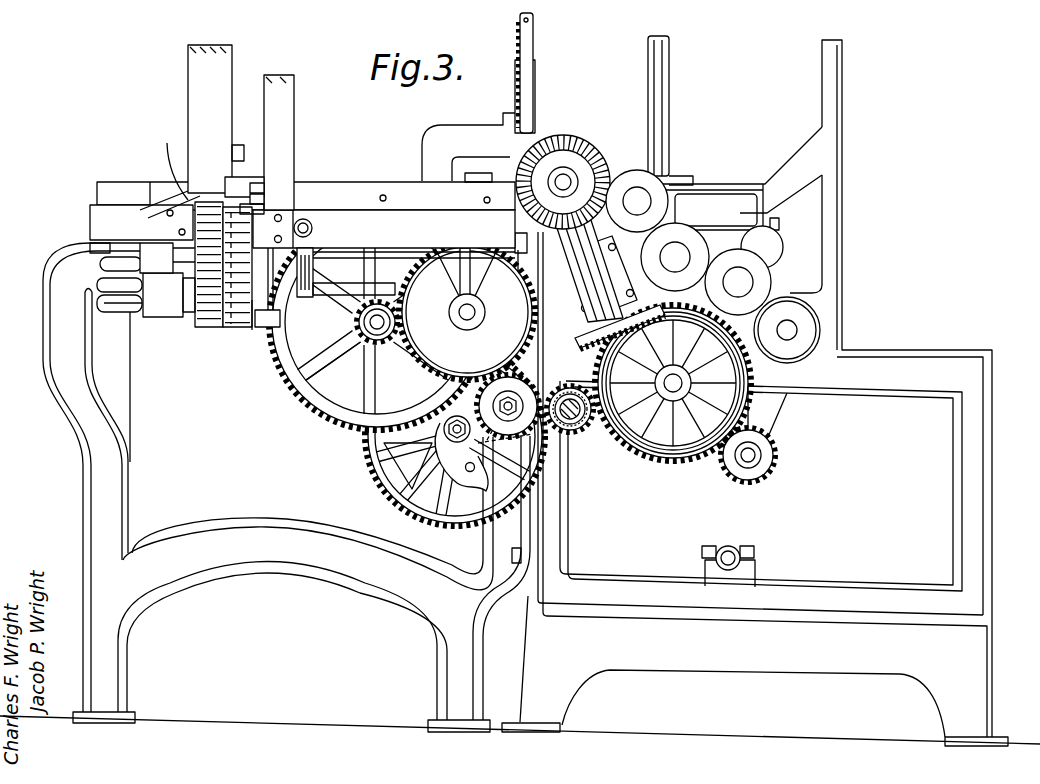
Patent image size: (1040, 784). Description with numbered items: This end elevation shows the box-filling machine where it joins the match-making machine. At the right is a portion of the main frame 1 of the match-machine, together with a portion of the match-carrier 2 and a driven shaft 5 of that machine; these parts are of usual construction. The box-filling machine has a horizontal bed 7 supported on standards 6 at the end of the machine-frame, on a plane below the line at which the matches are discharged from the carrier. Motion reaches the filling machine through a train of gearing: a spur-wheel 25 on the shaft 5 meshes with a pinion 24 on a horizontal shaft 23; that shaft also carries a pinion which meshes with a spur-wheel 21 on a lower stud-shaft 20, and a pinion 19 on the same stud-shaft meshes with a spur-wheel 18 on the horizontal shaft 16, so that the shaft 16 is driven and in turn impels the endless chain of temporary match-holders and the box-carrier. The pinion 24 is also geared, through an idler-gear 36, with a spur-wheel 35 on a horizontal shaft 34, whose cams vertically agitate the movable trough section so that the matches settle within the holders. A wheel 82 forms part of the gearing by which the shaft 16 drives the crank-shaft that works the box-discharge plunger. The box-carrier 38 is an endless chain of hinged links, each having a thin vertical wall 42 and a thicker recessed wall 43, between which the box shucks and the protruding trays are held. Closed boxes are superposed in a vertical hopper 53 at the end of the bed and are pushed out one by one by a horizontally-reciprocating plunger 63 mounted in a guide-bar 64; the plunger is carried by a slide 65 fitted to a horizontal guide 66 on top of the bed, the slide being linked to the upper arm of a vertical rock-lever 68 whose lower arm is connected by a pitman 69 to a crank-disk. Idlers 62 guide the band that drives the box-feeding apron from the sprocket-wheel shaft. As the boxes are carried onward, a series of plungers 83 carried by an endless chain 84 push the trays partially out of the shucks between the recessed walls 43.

The main frame 1 is at (870, 375).
The match-carrier 2 is at (533, 43).
The driven shaft 5 is at (735, 432).
The standards 6 is at (58, 352).
The horizontal bed 7 is at (312, 220).
The horizontal shaft 16 is at (378, 312).
The spur-wheel 18 is at (303, 410).
The pinion 19 is at (430, 446).
The stud-shaft 20 is at (488, 442).
The spur-wheel 21 is at (372, 482).
The horizontal shaft 23 is at (573, 422).
The pinion 24 is at (603, 440).
The spur-wheel 25 is at (687, 470).
The horizontal shaft 34 is at (471, 314).
The spur-wheel 35 is at (467, 312).
The idler-gear 36 is at (480, 378).
The box-carrier 38 is at (216, 332).
The vertical wall 42 is at (220, 315).
The wall 43 is at (262, 212).
The hopper 53 is at (188, 98).
The idlers 62 is at (310, 262).
The plunger 63 is at (221, 190).
The guide-bar 64 is at (145, 214).
The slide 65 is at (262, 203).
The horizontal guide 66 is at (264, 190).
The rock-lever 68 is at (255, 325).
The pitman 69 is at (280, 320).
The wheel 82 is at (364, 345).
The plungers 83 is at (100, 262).
The endless chain 84 is at (170, 318).